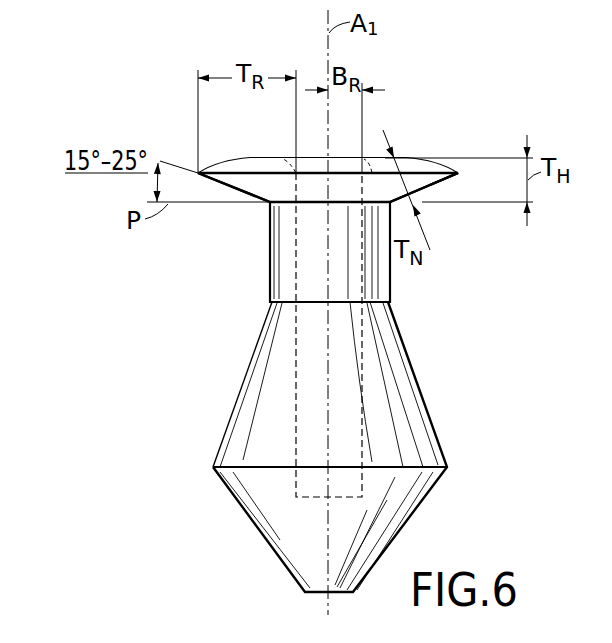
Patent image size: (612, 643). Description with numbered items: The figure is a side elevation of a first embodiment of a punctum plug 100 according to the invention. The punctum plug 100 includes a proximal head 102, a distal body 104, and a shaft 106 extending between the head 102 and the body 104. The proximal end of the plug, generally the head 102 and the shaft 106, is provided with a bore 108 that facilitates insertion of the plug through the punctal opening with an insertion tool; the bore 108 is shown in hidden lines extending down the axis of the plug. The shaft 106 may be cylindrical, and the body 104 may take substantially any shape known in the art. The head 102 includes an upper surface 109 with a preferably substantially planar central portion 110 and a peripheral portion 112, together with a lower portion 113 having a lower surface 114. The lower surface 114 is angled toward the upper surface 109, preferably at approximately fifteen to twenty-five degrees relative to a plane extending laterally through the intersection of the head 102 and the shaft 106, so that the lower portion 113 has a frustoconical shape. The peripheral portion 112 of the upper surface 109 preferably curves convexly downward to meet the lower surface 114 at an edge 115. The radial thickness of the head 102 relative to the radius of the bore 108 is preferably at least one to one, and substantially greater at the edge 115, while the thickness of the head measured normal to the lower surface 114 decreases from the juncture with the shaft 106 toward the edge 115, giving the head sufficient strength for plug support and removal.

The punctum plug 100 is at (227, 40).
The proximal head 102 is at (417, 160).
The distal body 104 is at (404, 500).
The shaft 106 is at (388, 282).
The bore 108 is at (295, 258).
The upper surface 109 is at (444, 165).
The central portion 110 is at (263, 157).
The peripheral portion 112 is at (220, 158).
The lower portion 113 is at (434, 187).
The lower surface 114 is at (430, 165).
The edge 115 is at (200, 174).